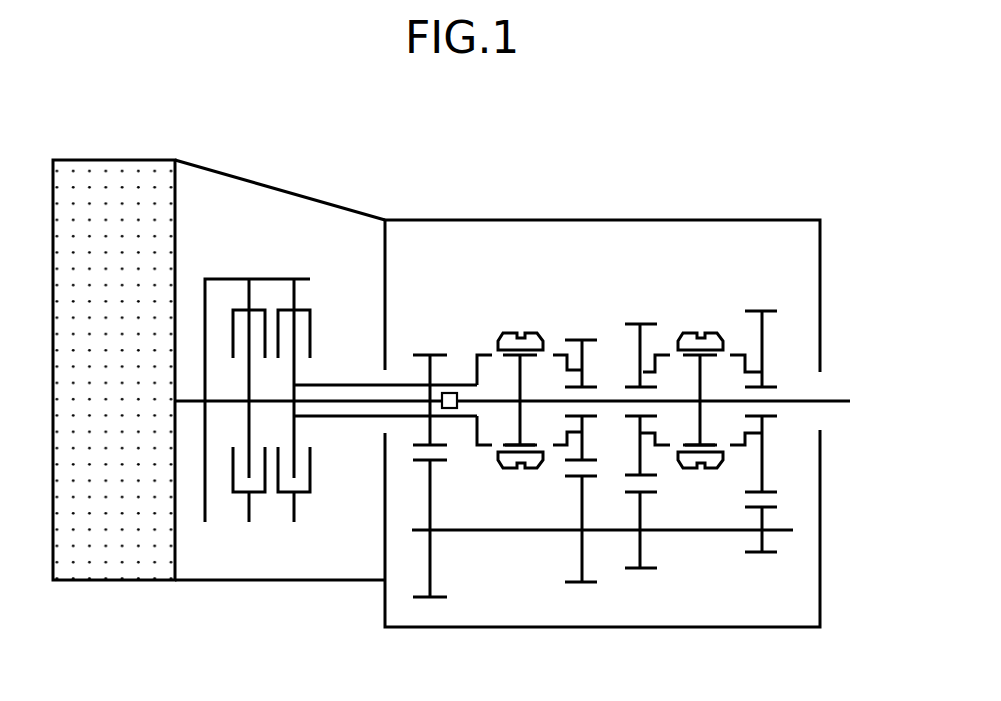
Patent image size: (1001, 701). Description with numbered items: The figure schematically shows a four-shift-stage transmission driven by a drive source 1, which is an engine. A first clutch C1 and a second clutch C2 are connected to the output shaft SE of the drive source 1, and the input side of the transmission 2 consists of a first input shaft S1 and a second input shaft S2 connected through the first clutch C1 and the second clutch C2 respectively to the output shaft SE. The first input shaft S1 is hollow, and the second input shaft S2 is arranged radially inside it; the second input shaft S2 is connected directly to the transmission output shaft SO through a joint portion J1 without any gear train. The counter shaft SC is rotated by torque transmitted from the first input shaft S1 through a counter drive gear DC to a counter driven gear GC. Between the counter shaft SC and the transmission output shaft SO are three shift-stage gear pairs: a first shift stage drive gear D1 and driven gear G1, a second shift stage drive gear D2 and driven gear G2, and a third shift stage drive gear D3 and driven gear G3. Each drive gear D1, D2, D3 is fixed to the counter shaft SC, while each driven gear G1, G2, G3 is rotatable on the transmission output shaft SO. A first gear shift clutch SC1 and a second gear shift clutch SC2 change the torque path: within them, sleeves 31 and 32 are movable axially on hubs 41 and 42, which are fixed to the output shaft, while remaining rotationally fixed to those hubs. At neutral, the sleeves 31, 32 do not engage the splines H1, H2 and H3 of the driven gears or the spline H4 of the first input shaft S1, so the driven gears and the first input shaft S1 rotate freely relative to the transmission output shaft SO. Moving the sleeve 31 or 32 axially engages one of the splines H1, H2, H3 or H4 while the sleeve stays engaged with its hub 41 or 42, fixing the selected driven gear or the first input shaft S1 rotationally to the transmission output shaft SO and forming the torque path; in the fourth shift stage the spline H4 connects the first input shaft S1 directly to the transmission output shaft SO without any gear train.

The drive source 1 is at (118, 160).
The transmission 2 is at (405, 218).
The output shaft of the drive source SE is at (192, 398).
The transmission output shaft SO is at (832, 399).
The second clutch C2 is at (242, 493).
The first clutch C1 is at (283, 493).
The first input shaft S1 is at (335, 383).
The second input shaft S2 is at (357, 415).
The counter drive gear DC is at (425, 353).
The counter driven gear GC is at (423, 599).
The joint portion J1 is at (452, 409).
The counter shaft SC is at (505, 532).
The second gear shift clutch SC2 is at (603, 174).
The first gear shift clutch SC1 is at (793, 174).
The spline of the first input shaft H4 is at (485, 352).
The sleeve 32 is at (525, 333).
The spline of the third shift stage driven gear H3 is at (552, 353).
The third shift stage driven gear G3 is at (588, 338).
The third shift stage drive gear D3 is at (575, 583).
The second shift stage driven gear G2 is at (640, 322).
The spline of the second shift stage driven gear H2 is at (668, 353).
The second shift stage drive gear D2 is at (648, 569).
The sleeve 31 is at (703, 333).
The spline of the first shift stage driven gear H1 is at (735, 353).
The first shift stage driven gear G1 is at (772, 310).
The first shift stage drive gear D1 is at (768, 553).
The hub 42 is at (520, 432).
The hub 41 is at (700, 433).